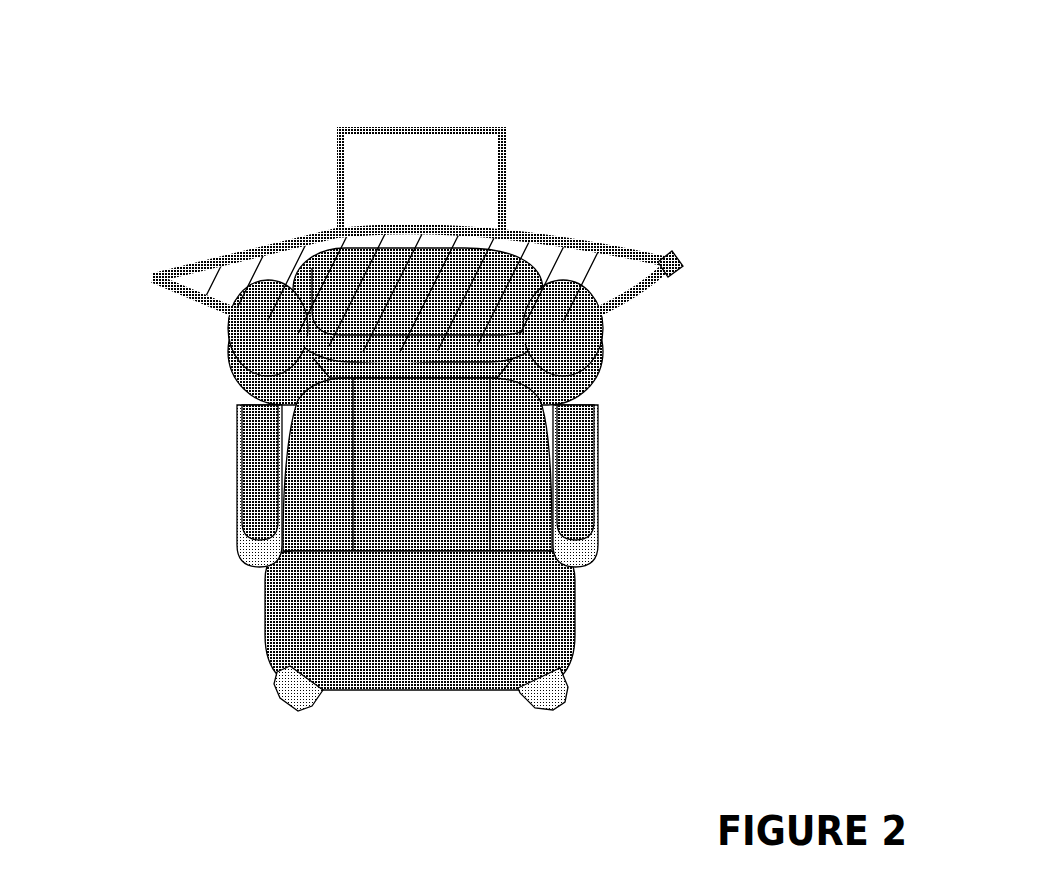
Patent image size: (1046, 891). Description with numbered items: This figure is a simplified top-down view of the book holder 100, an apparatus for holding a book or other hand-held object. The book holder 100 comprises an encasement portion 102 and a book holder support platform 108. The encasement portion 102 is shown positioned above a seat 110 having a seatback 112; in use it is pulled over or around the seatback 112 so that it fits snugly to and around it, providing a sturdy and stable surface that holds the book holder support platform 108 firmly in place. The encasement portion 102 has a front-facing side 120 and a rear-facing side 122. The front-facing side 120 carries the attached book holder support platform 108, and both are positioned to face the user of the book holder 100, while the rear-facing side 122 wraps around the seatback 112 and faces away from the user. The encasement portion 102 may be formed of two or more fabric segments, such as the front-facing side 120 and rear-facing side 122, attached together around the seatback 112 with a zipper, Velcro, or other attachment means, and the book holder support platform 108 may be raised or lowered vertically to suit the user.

The book holder 100 is at (480, 254).
The encasement portion 102 is at (452, 495).
The book holder support platform 108 is at (465, 157).
The seat 110 is at (300, 607).
The seatback 112 is at (247, 385).
The front-facing side 120 is at (602, 242).
The rear-facing side 122 is at (637, 300).